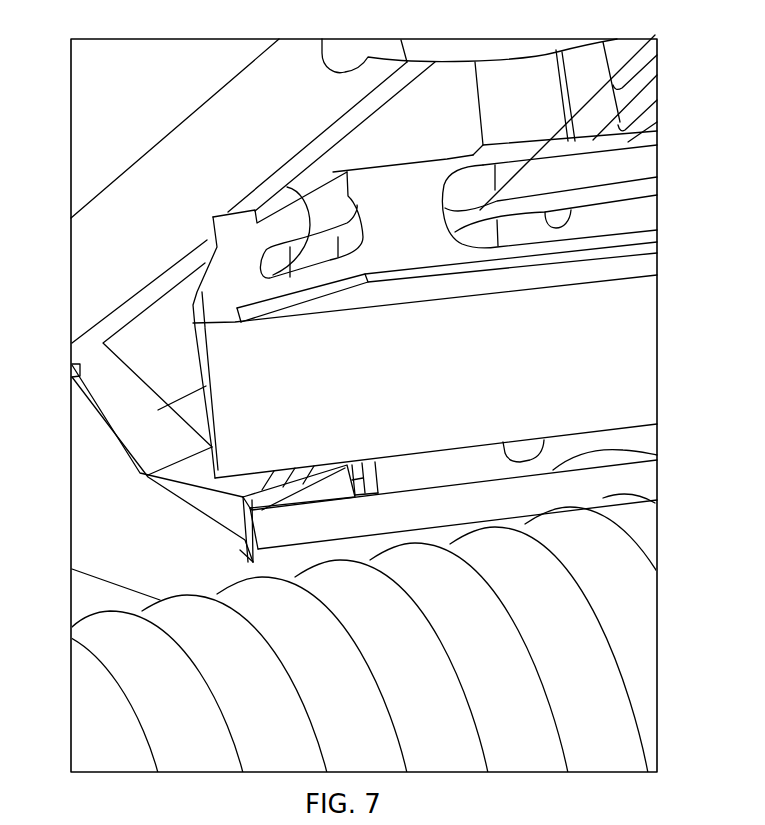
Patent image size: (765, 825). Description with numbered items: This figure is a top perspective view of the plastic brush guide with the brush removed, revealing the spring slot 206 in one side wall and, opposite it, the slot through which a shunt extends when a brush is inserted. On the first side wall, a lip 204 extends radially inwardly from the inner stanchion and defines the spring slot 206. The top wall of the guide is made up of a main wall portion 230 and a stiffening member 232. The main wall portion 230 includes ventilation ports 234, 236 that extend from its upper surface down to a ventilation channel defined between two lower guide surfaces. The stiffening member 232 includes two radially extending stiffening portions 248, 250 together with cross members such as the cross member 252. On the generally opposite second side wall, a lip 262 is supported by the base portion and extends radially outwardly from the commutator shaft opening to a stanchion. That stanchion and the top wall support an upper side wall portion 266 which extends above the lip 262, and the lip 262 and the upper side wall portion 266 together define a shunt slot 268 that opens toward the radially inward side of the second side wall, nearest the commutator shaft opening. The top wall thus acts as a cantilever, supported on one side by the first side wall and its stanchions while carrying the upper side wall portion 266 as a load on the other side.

The stiffening member 232 is at (432, 124).
The cross member 252 is at (651, 36).
The ventilation port 236 is at (573, 240).
The stiffening portion 250 is at (573, 240).
The stiffening portion 248 is at (328, 168).
The ventilation port 234 is at (287, 187).
The main wall portion 230 is at (203, 288).
The upper side wall portion 266 is at (207, 389).
The lip 204 is at (207, 521).
The spring slot 206 is at (377, 462).
The shunt slot 268 is at (544, 446).
The lip 262 is at (657, 455).